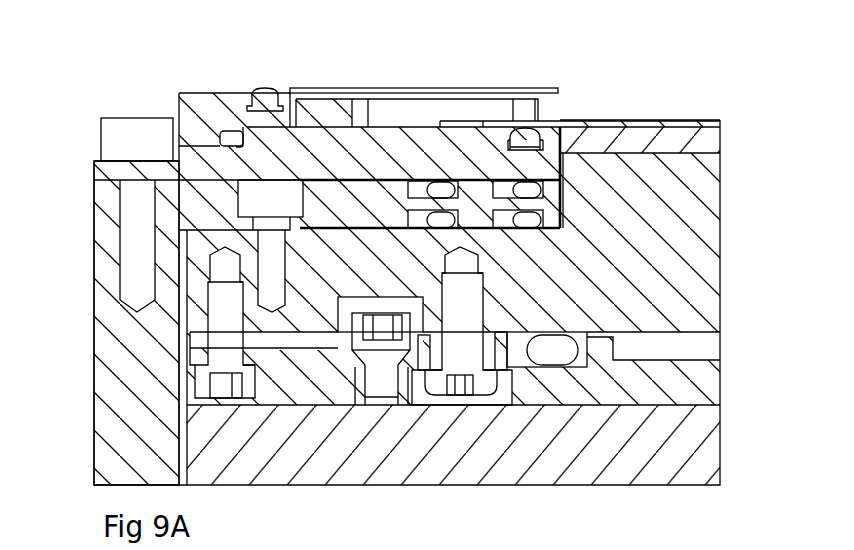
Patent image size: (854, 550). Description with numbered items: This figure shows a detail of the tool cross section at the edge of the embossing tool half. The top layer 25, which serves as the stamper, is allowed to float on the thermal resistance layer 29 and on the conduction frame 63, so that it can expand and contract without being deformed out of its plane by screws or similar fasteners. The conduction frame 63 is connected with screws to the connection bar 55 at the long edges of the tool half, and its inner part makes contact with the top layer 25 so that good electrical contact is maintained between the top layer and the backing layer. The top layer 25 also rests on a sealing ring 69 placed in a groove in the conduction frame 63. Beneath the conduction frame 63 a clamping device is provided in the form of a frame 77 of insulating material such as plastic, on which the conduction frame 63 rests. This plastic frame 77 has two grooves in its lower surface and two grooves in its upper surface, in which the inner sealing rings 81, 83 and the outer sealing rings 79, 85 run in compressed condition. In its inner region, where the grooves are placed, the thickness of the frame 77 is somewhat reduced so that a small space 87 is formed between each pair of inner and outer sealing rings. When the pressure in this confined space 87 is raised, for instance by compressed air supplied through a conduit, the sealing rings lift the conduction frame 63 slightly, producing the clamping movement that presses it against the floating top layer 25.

The top layer 25 is at (648, 125).
The thermal resistance layer 29 is at (707, 142).
The connection bar 55 is at (112, 356).
The conduction frame 63 is at (318, 128).
The sealing ring 69 is at (530, 190).
The frame 77 is at (373, 207).
The outer sealing ring 79 is at (438, 190).
The inner sealing ring 81 is at (548, 126).
The inner sealing ring 83 is at (527, 222).
The outer sealing ring 85 is at (440, 220).
The small space 87 is at (525, 142).